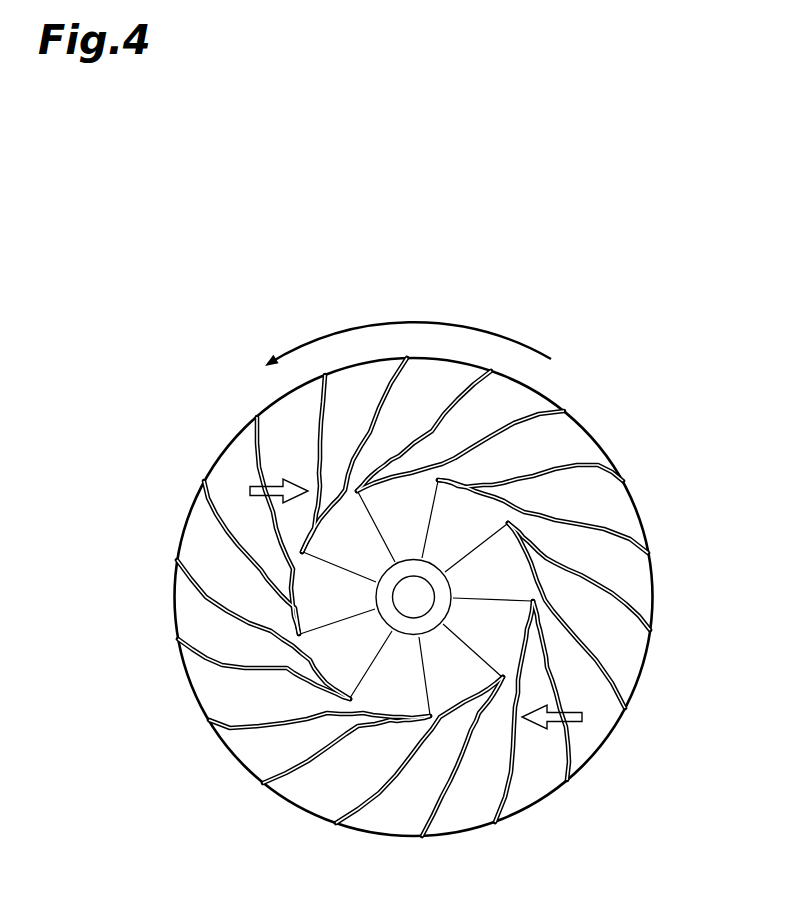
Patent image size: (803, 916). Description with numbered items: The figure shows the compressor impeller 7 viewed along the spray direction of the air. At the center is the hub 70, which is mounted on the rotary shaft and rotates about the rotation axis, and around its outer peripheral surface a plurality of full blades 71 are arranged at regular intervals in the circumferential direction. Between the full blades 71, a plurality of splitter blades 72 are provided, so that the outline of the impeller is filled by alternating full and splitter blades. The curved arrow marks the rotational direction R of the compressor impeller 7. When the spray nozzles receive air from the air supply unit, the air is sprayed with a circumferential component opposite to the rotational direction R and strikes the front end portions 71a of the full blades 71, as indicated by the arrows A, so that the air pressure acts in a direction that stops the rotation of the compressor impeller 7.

The compressor impeller 7 is at (416, 618).
The hub 70 is at (413, 627).
The full blades 71 is at (560, 513).
The front end portions 71a is at (447, 493).
The splitter blades 72 is at (613, 593).
The rotational direction R is at (418, 320).
The arrows (air spray direction) A is at (273, 482).